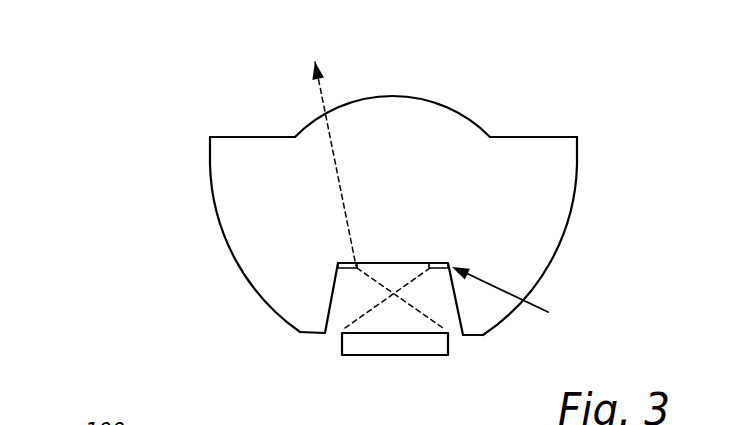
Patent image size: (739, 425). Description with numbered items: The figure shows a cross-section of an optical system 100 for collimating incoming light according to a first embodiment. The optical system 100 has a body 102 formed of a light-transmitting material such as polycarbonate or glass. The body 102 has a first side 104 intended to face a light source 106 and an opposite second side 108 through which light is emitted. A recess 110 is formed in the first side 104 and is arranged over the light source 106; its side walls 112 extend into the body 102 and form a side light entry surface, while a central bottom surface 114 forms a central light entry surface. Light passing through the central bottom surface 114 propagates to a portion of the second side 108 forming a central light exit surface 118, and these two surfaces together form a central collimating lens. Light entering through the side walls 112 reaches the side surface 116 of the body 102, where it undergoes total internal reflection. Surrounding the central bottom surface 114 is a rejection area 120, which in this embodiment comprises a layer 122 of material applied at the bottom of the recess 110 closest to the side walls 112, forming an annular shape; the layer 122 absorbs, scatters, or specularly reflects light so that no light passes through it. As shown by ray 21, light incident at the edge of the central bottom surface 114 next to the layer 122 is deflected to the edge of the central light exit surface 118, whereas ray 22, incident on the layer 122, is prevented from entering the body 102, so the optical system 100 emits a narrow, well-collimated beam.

The optical system 100 is at (182, 82).
The body 102 is at (223, 173).
The first side 104 is at (473, 338).
The light source 106 is at (393, 345).
The second side 108 is at (537, 135).
The recess 110 is at (339, 312).
The side walls 112 is at (333, 286).
The central bottom surface 114 is at (378, 266).
The side surface 116 is at (558, 247).
The central light exit surface 118 is at (445, 97).
The rejection area 120 is at (524, 297).
The layer of material 122 is at (355, 262).
The ray 21 is at (332, 158).
The ray 22 is at (418, 268).